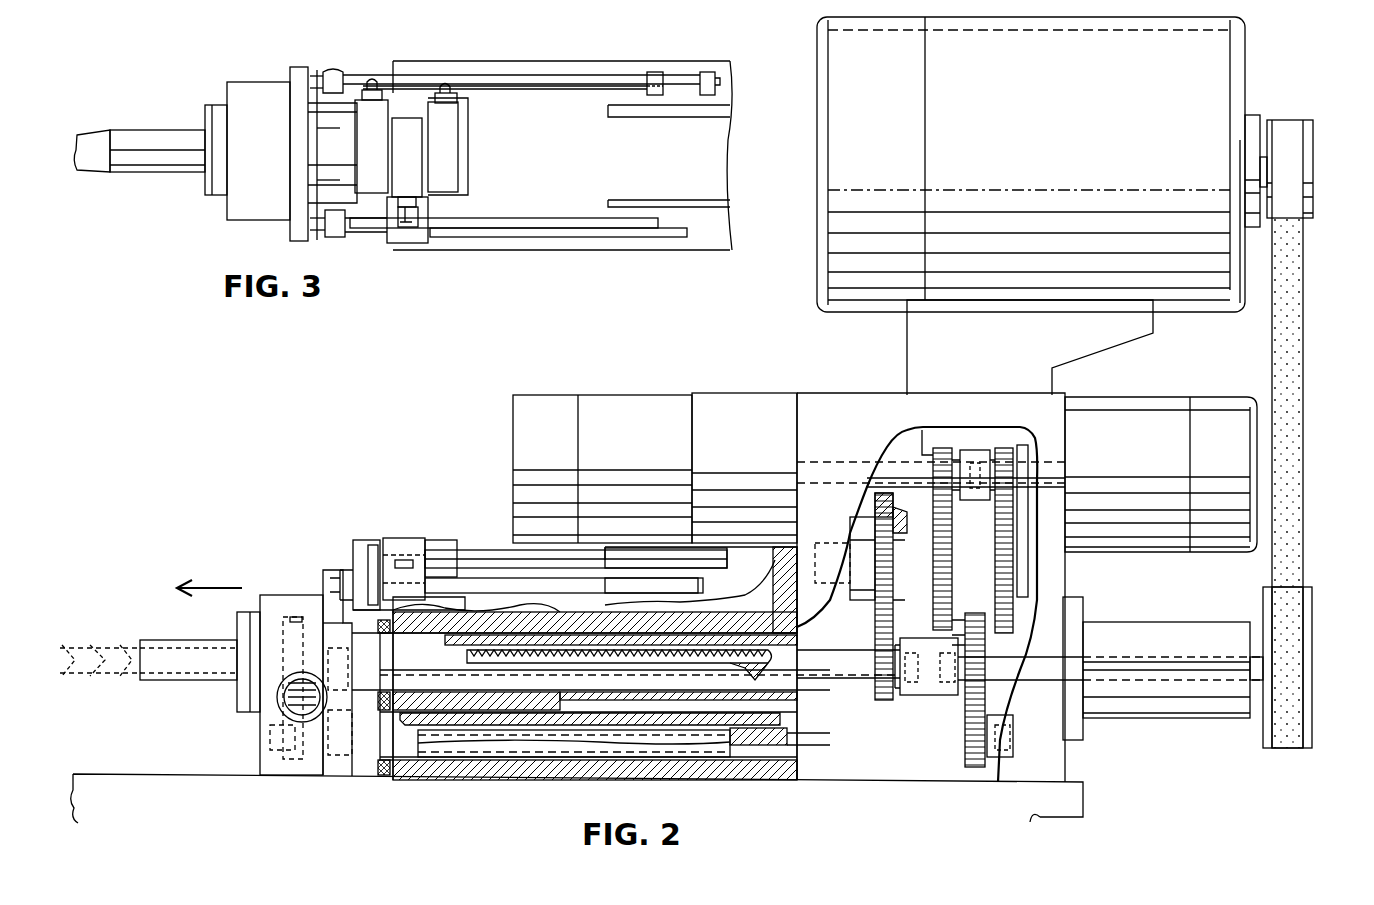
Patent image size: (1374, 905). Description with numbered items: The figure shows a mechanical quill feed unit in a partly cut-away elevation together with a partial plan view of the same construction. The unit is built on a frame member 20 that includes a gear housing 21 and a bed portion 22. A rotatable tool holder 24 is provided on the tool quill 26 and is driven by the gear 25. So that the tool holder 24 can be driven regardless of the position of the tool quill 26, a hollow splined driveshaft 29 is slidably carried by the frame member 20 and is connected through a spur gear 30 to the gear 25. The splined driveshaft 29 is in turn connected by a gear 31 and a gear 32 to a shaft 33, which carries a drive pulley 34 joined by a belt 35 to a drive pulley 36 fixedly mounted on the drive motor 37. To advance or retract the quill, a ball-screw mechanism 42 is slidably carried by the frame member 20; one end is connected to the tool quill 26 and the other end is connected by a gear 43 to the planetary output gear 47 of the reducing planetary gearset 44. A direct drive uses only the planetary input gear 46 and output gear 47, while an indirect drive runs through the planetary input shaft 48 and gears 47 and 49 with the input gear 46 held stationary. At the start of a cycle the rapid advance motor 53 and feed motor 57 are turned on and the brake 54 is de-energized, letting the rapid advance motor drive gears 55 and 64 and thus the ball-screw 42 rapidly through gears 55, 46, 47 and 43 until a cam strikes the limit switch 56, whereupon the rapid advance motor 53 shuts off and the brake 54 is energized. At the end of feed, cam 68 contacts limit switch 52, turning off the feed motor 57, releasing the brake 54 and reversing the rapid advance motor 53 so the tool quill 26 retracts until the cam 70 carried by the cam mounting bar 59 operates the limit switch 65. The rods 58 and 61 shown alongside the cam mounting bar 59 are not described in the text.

In FIG. 2, the frame member 20 is at (772, 792).
In FIG. 2, the gear housing 21 is at (1040, 800).
In FIG. 2, the bed portion 22 is at (505, 780).
In FIG. 3, the rotatable tool holder 24 is at (165, 172).
In FIG. 2, the rotatable tool holder 24 is at (170, 683).
In FIG. 2, the gear 25 is at (300, 615).
In FIG. 3, the tool quill 26 is at (245, 82).
In FIG. 2, the tool quill 26 is at (287, 778).
In FIG. 2, the hollow splined driveshaft 29 is at (388, 780).
In FIG. 2, the spur gear 30 is at (315, 760).
In FIG. 2, the gear 31 is at (986, 777).
In FIG. 2, the gear 32 is at (963, 702).
In FIG. 2, the shaft 33 is at (1022, 688).
In FIG. 2, the drive pulley 34 is at (1268, 748).
In FIG. 2, the belt 35 is at (1298, 441).
In FIG. 2, the drive pulley 36 is at (1314, 133).
In FIG. 2, the drive motor 37 is at (1246, 66).
In FIG. 2, the ball-screw mechanism 42 is at (452, 640).
In FIG. 2, the gear 43 is at (878, 700).
In FIG. 2, the planetary gearset 44 is at (876, 503).
In FIG. 2, the planetary input gear 46 is at (953, 550).
In FIG. 2, the planetary output gear 47 is at (875, 610).
In FIG. 2, the planetary input shaft 48 is at (985, 620).
In FIG. 2, the gear 49 is at (1013, 625).
In FIG. 3, the limit switch 52 is at (468, 133).
In FIG. 2, the limit switch 52 is at (445, 538).
In FIG. 2, the rapid advance motor 53 is at (565, 395).
In FIG. 2, the brake 54 is at (727, 393).
In FIG. 2, the gear 55 is at (919, 428).
In FIG. 3, the limit switch 56 is at (410, 118).
In FIG. 3, the feed motor 57 is at (380, 235).
In FIG. 2, the feed motor 57 is at (1178, 397).
In FIG. 3, the rod 58 is at (690, 237).
In FIG. 2, the rod 58 is at (487, 550).
In FIG. 3, the cam mounting bar 59 is at (540, 75).
In FIG. 3, the rod 61 is at (565, 218).
In FIG. 2, the gear 64 is at (998, 448).
In FIG. 3, the limit switch 65 is at (360, 100).
In FIG. 3, the cam 68 is at (655, 72).
In FIG. 3, the cam 70 is at (330, 68).